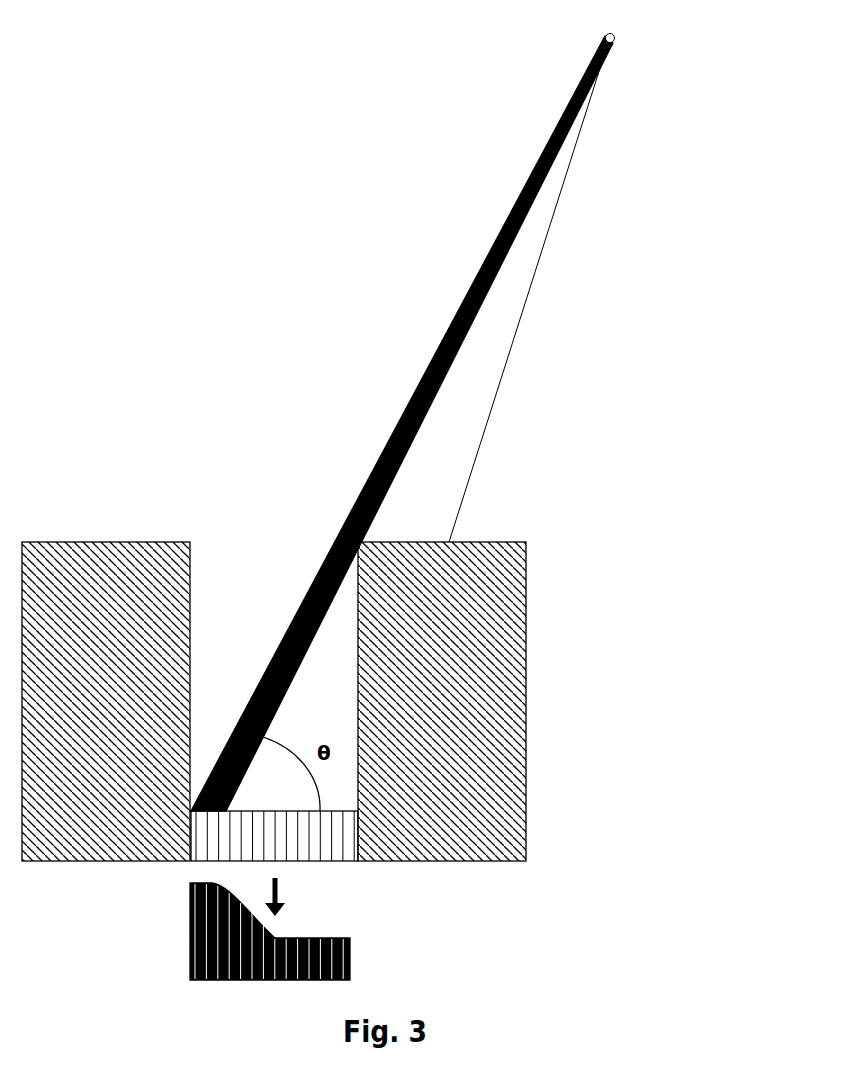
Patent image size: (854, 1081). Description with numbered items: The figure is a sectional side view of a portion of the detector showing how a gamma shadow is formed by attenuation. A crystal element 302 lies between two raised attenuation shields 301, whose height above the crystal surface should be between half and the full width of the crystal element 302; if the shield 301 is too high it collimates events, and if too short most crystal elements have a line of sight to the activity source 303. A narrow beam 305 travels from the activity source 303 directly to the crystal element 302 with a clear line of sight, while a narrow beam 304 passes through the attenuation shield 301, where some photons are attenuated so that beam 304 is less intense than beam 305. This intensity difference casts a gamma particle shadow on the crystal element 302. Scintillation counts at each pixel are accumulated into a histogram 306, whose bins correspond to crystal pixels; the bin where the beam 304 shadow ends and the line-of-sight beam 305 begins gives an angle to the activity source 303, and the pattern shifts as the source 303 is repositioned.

The attenuation shield 301 is at (526, 612).
The crystal element 302 is at (310, 862).
The activity source 303 is at (617, 43).
The narrow beam 304 is at (477, 373).
The narrow beam 305 is at (397, 427).
The histogram 306 is at (190, 919).